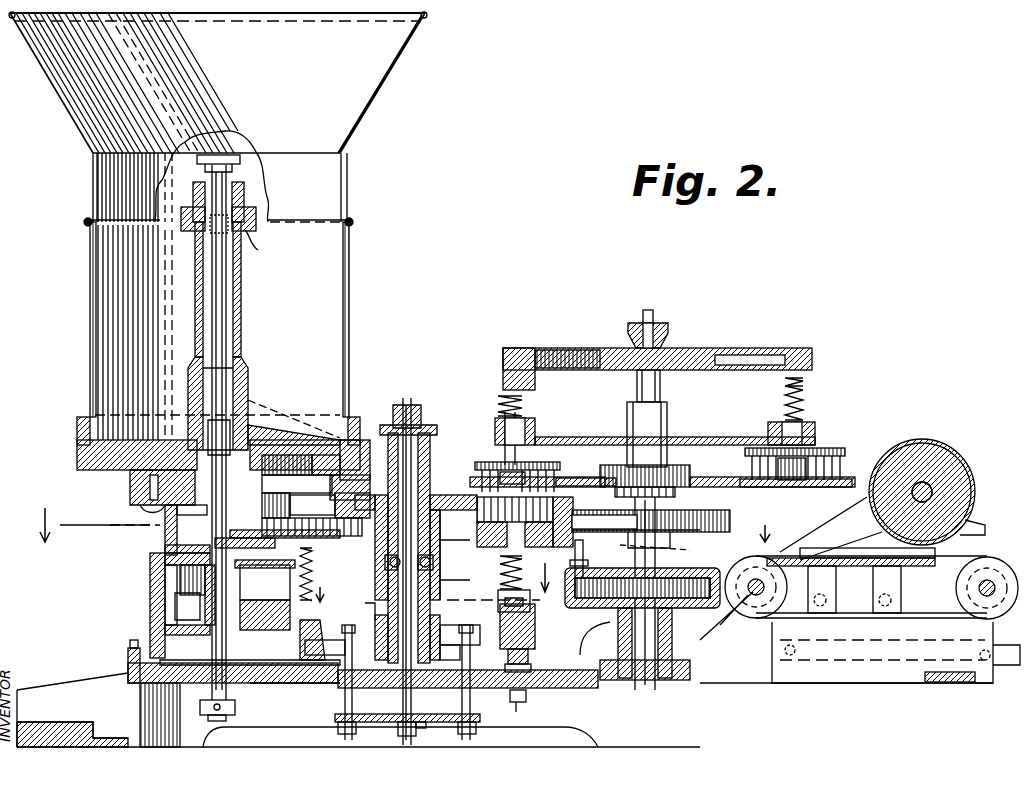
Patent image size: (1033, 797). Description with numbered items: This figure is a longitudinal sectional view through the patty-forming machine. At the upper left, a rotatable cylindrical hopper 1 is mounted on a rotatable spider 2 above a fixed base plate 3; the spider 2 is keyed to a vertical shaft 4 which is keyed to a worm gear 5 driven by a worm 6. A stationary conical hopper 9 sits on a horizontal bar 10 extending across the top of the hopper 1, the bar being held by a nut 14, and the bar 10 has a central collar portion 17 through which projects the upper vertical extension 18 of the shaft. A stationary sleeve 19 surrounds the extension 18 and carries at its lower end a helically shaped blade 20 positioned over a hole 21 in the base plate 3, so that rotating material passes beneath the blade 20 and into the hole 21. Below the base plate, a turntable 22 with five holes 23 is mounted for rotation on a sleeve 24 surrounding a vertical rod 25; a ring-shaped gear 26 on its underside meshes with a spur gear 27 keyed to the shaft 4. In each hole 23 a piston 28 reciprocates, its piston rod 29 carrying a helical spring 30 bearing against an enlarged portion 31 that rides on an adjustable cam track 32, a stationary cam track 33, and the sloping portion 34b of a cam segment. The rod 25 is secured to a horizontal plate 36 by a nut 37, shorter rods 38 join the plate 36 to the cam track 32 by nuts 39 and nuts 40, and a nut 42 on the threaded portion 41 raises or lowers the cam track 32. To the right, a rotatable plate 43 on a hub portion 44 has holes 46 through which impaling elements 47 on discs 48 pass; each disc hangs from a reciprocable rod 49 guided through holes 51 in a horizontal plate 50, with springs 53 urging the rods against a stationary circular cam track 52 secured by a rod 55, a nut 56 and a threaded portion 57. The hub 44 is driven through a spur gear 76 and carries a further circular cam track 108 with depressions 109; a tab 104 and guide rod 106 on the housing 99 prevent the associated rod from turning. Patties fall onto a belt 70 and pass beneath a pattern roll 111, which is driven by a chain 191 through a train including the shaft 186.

The conical hopper 9 is at (375, 84).
The cylindrical hopper 1 is at (348, 290).
The nut 14 is at (193, 168).
The horizontal bar 10 is at (197, 200).
The collar portion 17 is at (242, 238).
The stationary sleeve 19 is at (197, 300).
The upper vertical extension 18 is at (226, 290).
The vertical shaft 4 is at (195, 705).
The helically shaped blade 20 is at (280, 420).
The spider 2 is at (85, 455).
The base plate 3 is at (135, 475).
The worm gear 5 is at (406, 564).
The spur gear 27 is at (175, 536).
The piston rod 29 is at (280, 582).
The enlarged portion 31 is at (282, 615).
The helical spring 30 is at (312, 576).
The hole 21 is at (340, 480).
The holes 23 is at (338, 505).
The piston 28 is at (290, 525).
The ring-shaped gear 26 is at (332, 540).
The turntable 22 is at (447, 497).
The threaded portion 41 is at (410, 405).
The nut 42 is at (424, 418).
The sleeve 24 is at (440, 560).
The worm 6 is at (439, 584).
The nuts 40 is at (490, 612).
The adjustable cam track 32 is at (322, 638).
The sloping portion 34b is at (305, 684).
The shorter rods 38 is at (370, 700).
The vertical rod 25 is at (392, 724).
The nuts 39 is at (345, 740).
The nut 37 is at (408, 740).
The horizontal plate 36 is at (437, 740).
The cam track 33 is at (538, 630).
The rotatable plate 43 is at (502, 456).
The disc 48 is at (565, 458).
The impaling element 47 is at (565, 495).
The holes 46 is at (565, 480).
The springs 53 is at (530, 407).
The reciprocable rod 49 is at (808, 402).
The holes 51 is at (768, 425).
The circular cam track 52 is at (510, 348).
The threaded portion 57 is at (652, 312).
The nut 56 is at (668, 338).
The rod 55 is at (662, 378).
The horizontal plate 50 is at (700, 440).
The hub portion 44 is at (688, 470).
The circular cam track 108 is at (728, 525).
The depressions 109 is at (678, 545).
The guide rod 106 is at (583, 550).
The tab 104 is at (588, 565).
The housing 99 is at (568, 603).
The spur gear 76 is at (616, 610).
The belt 70 is at (985, 562).
The shaft 186 is at (732, 609).
The pattern roll 111 is at (935, 455).
The chain 191 is at (800, 540).